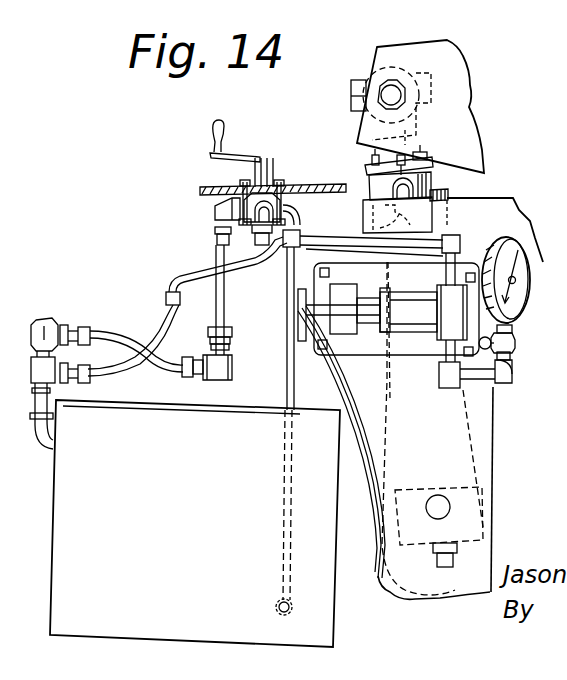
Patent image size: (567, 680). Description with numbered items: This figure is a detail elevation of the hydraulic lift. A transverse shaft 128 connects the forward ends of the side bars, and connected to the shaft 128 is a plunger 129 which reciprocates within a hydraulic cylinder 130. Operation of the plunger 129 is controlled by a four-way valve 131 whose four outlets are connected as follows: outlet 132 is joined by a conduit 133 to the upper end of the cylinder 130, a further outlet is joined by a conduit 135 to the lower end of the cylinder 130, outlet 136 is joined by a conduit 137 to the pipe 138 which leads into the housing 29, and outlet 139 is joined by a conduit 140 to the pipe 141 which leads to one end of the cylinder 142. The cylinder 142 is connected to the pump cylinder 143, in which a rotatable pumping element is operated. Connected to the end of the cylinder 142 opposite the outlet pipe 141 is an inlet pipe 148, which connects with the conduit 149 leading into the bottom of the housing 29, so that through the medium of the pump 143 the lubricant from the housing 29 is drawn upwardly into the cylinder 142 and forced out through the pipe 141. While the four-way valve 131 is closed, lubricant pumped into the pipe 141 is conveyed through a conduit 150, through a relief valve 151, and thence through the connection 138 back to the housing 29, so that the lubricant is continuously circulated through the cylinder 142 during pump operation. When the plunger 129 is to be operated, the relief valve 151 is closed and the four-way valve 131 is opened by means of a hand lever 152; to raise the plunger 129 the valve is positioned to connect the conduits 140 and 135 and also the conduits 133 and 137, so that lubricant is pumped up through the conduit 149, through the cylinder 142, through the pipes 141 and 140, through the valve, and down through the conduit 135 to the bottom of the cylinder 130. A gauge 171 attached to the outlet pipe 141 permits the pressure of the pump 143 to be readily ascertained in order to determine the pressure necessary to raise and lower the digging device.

The transverse shaft 128 is at (394, 90).
The plunger 129 is at (404, 157).
The hydraulic cylinder 130 is at (435, 182).
The four-way valve 131 is at (276, 180).
The outlet 132 is at (240, 222).
The conduit 133 is at (366, 197).
The conduit 135 is at (360, 453).
The outlet 136 is at (311, 188).
The conduit 137 is at (185, 276).
The pipe 138 is at (54, 411).
The outlet 139 is at (227, 211).
The conduit 140 is at (222, 305).
The pipe 141 is at (330, 378).
The cylinder 142 is at (504, 328).
The pump cylinder 143 is at (409, 300).
The inlet pipe 148 is at (340, 246).
The conduit 149 is at (290, 343).
The conduit 150 is at (158, 367).
The relief valve 151 is at (45, 328).
The hand lever 152 is at (245, 152).
The gauge 171 is at (477, 299).
The housing 29 is at (195, 523).